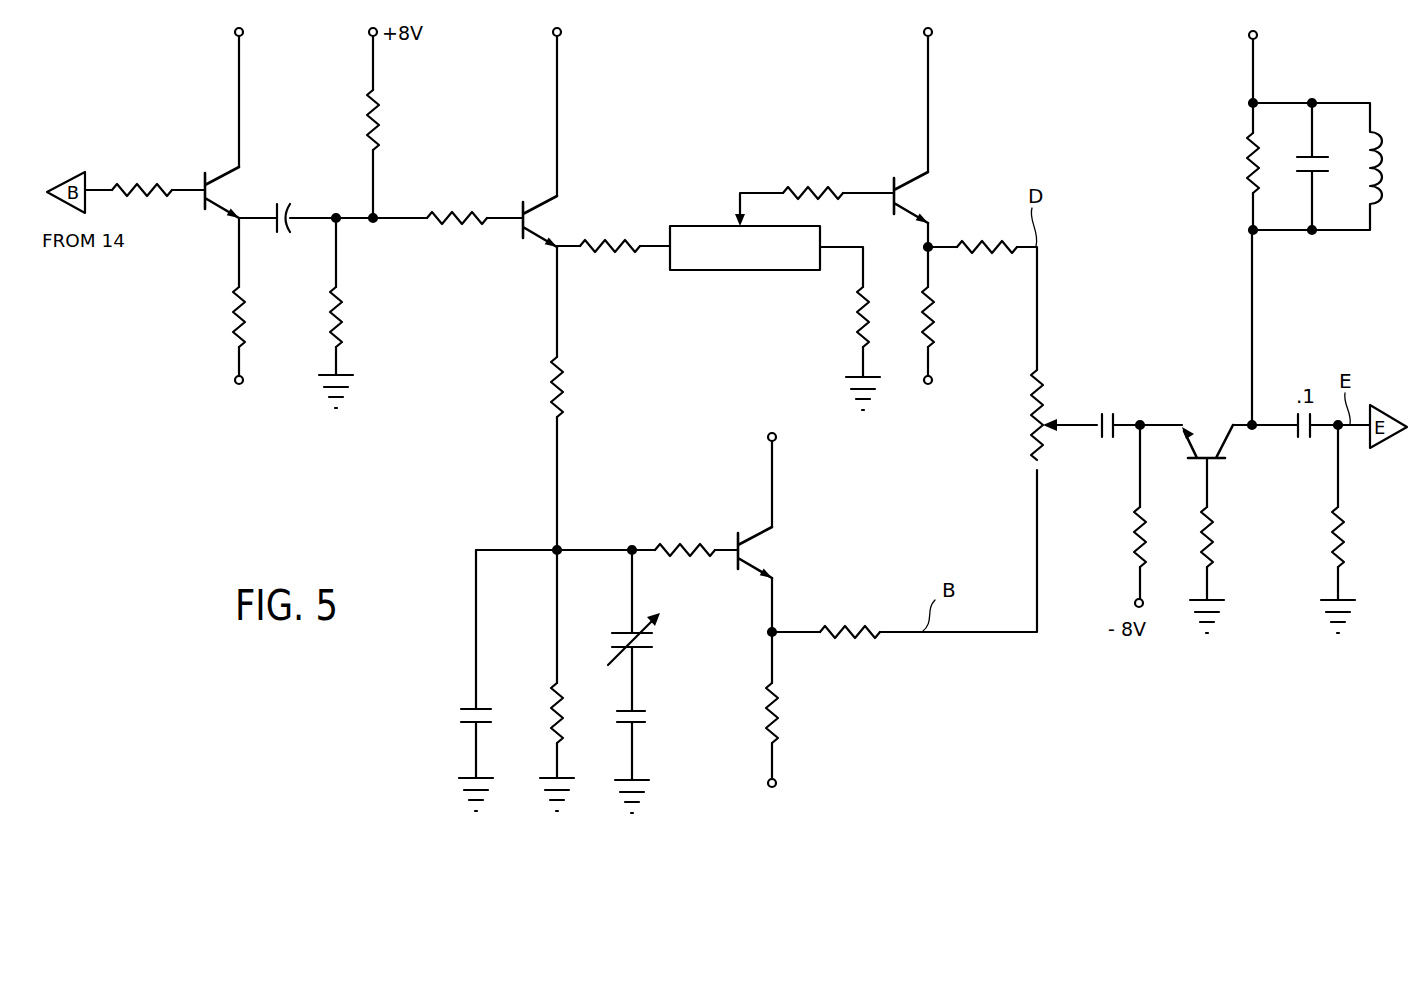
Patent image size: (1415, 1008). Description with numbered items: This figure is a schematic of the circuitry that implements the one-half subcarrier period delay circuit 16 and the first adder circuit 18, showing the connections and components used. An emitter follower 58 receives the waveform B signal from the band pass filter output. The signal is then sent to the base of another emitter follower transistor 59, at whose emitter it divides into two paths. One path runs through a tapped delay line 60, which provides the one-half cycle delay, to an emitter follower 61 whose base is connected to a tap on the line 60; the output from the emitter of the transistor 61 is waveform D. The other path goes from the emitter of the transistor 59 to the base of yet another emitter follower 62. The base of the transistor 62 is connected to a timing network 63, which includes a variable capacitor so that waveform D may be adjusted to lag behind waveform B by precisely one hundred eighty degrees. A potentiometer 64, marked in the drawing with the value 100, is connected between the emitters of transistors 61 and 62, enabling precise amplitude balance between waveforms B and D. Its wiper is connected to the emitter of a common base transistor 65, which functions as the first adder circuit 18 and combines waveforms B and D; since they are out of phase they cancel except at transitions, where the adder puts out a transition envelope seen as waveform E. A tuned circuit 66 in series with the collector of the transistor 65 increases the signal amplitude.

The one-half subcarrier period delay circuit 16 is at (738, 143).
The first adder circuit 18 is at (1187, 678).
The emitter follower 58 is at (210, 193).
The emitter follower transistor 59 is at (533, 217).
The tapped delay line 60 is at (752, 262).
The emitter follower 61 is at (908, 200).
The emitter follower 62 is at (745, 553).
The timing network 63 is at (572, 818).
The potentiometer 64 is at (1051, 398).
The common base transistor 65 is at (1205, 455).
The tuned circuit 66 is at (1347, 91).
The potentiometer wiper 100 is at (1031, 434).